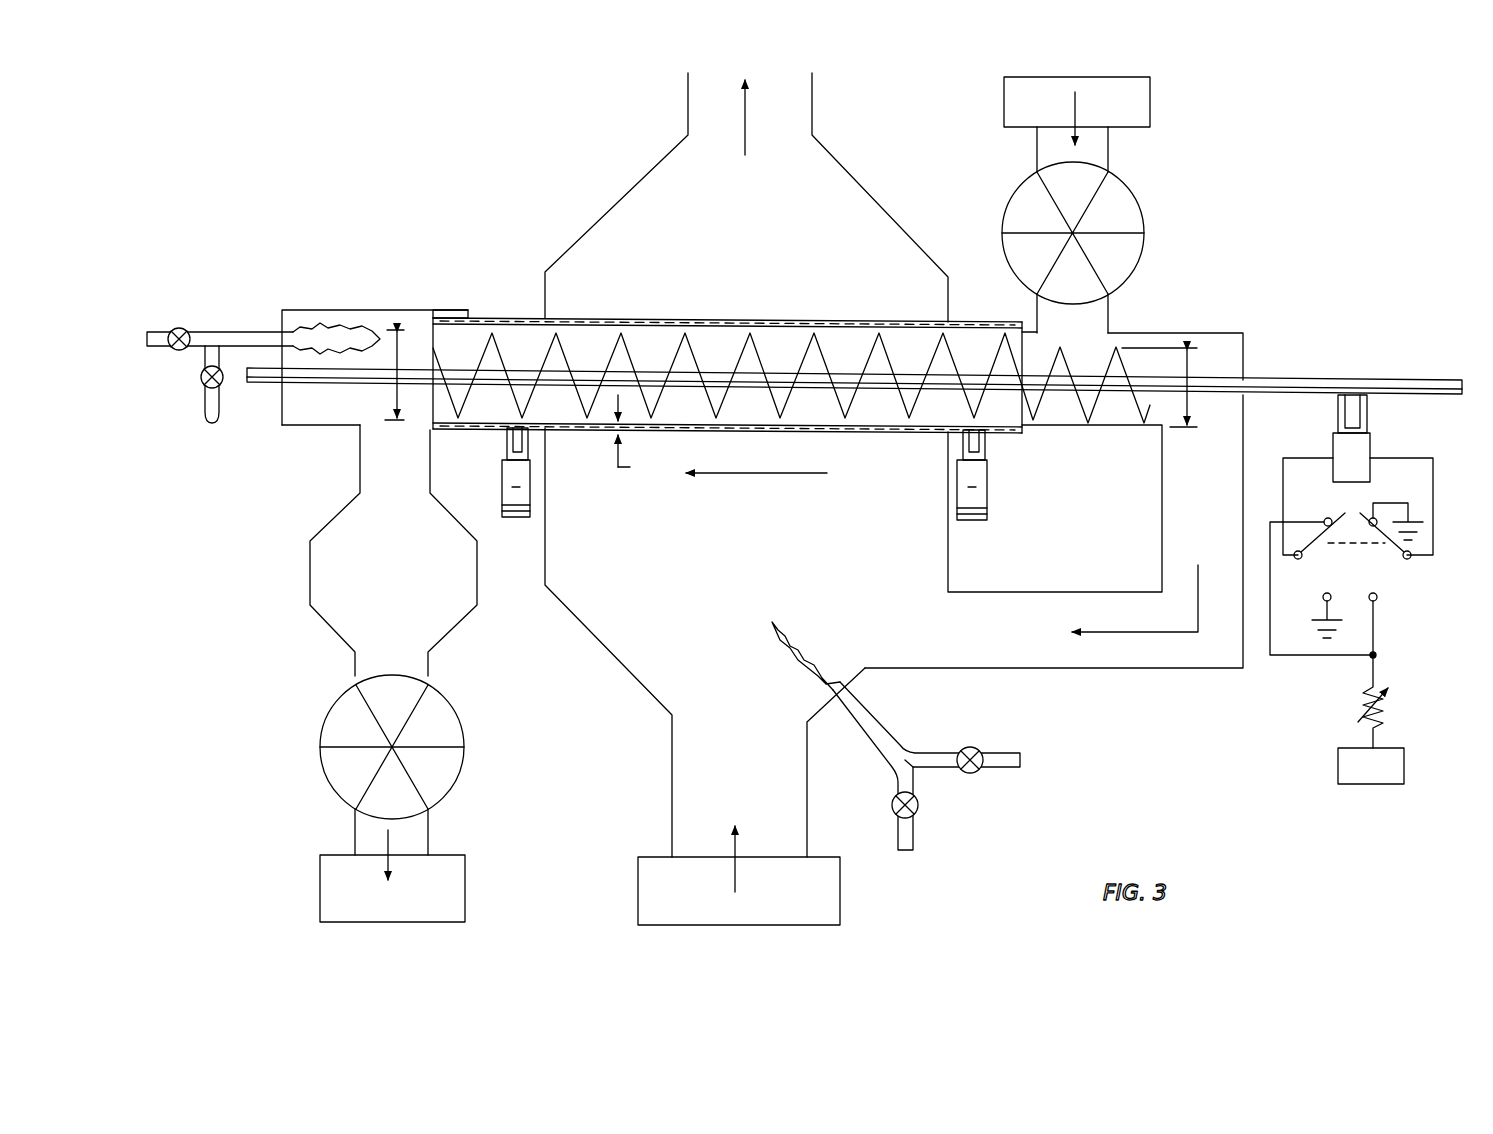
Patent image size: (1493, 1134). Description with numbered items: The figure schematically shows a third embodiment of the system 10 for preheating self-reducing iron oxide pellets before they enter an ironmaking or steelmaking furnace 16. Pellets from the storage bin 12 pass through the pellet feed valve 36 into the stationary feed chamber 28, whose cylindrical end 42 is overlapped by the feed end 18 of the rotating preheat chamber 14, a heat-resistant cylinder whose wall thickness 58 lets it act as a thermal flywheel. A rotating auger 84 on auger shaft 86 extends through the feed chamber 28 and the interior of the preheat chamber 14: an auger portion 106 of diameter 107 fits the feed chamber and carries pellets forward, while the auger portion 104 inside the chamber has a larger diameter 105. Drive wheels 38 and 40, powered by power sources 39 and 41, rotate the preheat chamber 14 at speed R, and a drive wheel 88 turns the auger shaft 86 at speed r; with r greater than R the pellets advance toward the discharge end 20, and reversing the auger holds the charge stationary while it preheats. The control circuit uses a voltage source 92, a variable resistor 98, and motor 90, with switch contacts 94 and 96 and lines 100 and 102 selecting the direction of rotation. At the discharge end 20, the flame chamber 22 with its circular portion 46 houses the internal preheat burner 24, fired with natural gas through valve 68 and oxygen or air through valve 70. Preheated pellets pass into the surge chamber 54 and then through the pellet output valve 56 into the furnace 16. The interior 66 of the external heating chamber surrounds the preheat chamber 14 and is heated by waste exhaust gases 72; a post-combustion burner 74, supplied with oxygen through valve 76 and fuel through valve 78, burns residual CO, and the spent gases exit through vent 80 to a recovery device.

The system 10 is at (408, 113).
The storage bin 12 is at (1150, 110).
The preheat chamber 14 is at (662, 312).
The ironmaking or steelmaking furnace 16 is at (465, 888).
The feed end 18 is at (973, 357).
The discharge end 20 is at (512, 345).
The flame chamber 22 is at (318, 326).
The internal preheat burner 24 is at (250, 330).
The feed chamber 28 is at (1208, 335).
The pellet feed valve 36 is at (1143, 207).
The drive wheel 38 is at (987, 448).
The power source 39 is at (985, 500).
The drive wheel 40 is at (505, 444).
The power source 41 is at (510, 487).
The cylindrical end 42 is at (1020, 335).
The circular portion 46 is at (460, 309).
The surge chamber 54 is at (378, 573).
The pellet output valve 56 is at (320, 768).
The thickness 58 is at (722, 435).
The external heating chamber interior 66 is at (726, 558).
The valve 68 is at (179, 328).
The valve 70 is at (203, 388).
The exhaust gases 72 is at (840, 888).
The post-combustion burner 74 is at (872, 722).
The valve 76 is at (892, 806).
The valve 78 is at (963, 748).
The vent 80 is at (812, 105).
The rotating auger 84 is at (770, 350).
The auger shaft 86 is at (843, 380).
The drive wheel 88 is at (1367, 414).
The motor 90 is at (1348, 445).
The voltage source 92 is at (1404, 772).
The switch contact 94 is at (1320, 547).
The switch contact 96 is at (1392, 547).
The variable resistor 98 is at (1385, 712).
The line 100 is at (1283, 477).
The line 102 is at (1433, 477).
The auger portion 104 is at (1003, 352).
The diameter 105 is at (390, 392).
The auger portion 106 is at (1068, 400).
The diameter 107 is at (1192, 370).